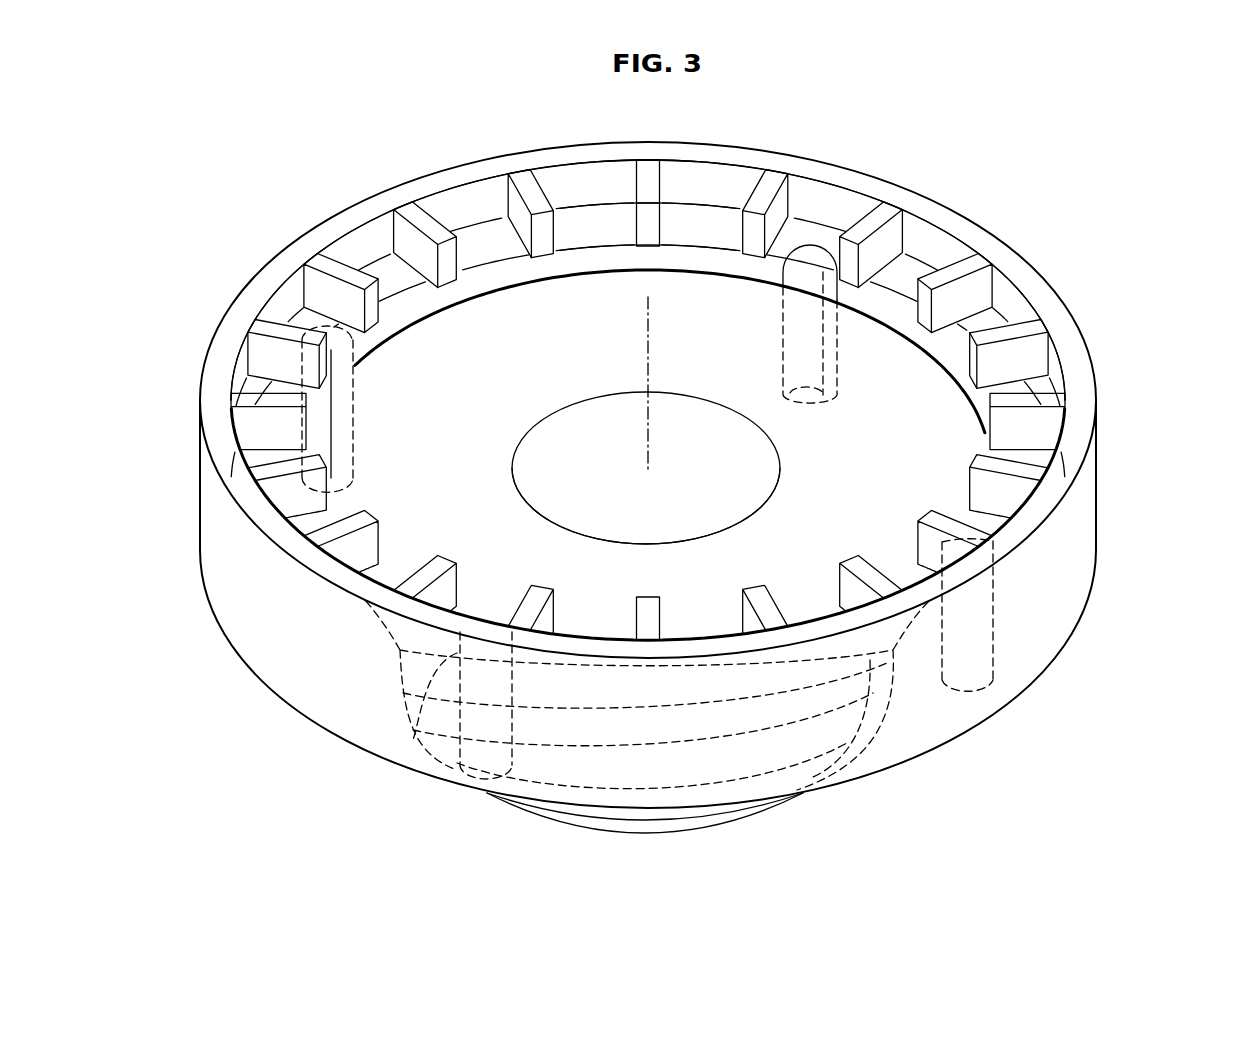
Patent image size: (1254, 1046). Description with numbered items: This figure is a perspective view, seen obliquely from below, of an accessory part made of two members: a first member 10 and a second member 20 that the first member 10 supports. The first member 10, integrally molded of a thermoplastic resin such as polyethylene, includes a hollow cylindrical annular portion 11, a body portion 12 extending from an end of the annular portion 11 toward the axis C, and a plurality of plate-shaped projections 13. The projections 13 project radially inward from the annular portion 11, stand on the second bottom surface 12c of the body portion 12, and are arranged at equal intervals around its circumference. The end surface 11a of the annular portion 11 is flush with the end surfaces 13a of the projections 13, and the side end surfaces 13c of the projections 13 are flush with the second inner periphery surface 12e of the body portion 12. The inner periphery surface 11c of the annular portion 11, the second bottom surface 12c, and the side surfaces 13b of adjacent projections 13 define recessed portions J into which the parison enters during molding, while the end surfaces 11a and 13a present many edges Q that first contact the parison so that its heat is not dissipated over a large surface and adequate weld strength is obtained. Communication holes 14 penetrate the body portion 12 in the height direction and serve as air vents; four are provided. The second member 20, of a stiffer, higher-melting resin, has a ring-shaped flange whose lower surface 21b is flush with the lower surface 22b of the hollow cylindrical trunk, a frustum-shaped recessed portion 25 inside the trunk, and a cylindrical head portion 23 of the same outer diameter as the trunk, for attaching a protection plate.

The first member 10 is at (1112, 466).
The annular portion 11 is at (1075, 525).
The end surface 11a is at (1067, 343).
The inner periphery surface 11c is at (1013, 306).
The body portion 12 is at (922, 757).
The second bottom surface 12c is at (478, 195).
The second inner periphery surface 12e is at (625, 258).
The projections 13 is at (410, 190).
The end surfaces 13a is at (648, 161).
The side surfaces 13b is at (437, 195).
The side end surfaces 13c is at (482, 290).
The communication holes 14 is at (340, 350).
The second member 20 is at (748, 832).
The lower surface 21b is at (967, 445).
The lower surface 22b is at (725, 548).
The head portion 23 is at (623, 833).
The recessed portion 25 is at (590, 438).
The recessed portions J is at (589, 181).
The edges Q is at (548, 183).
The axis C is at (655, 352).